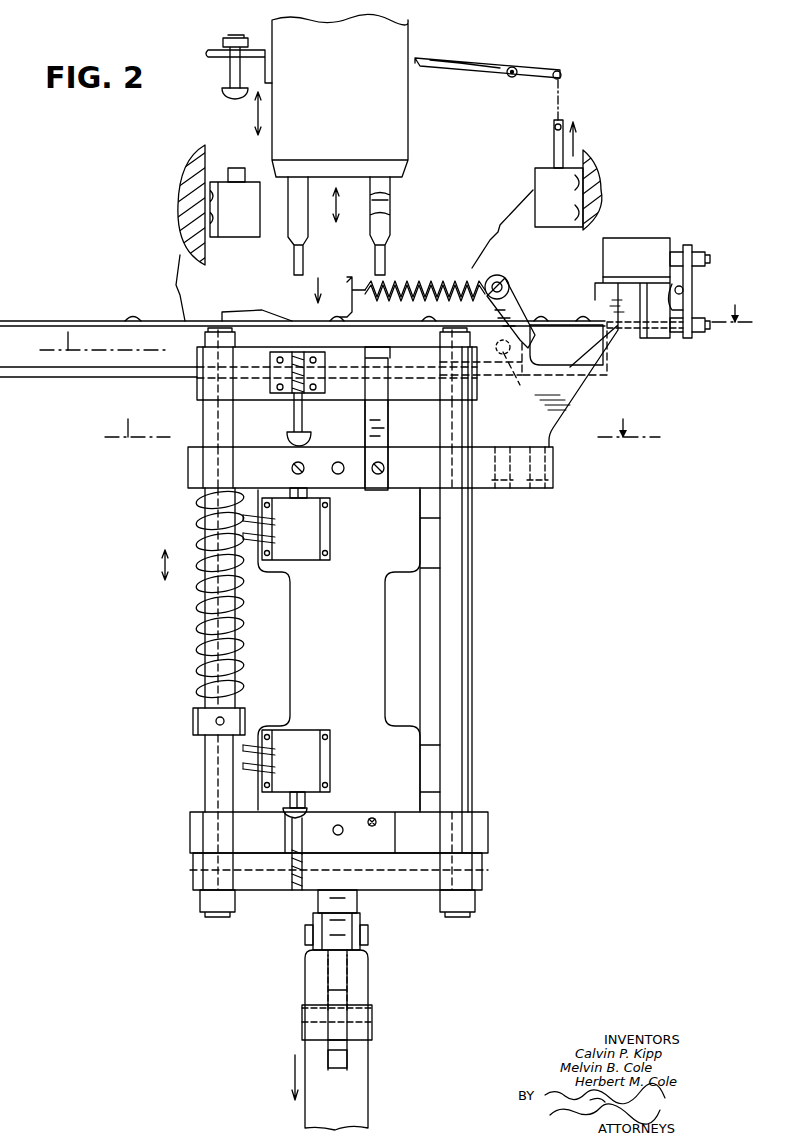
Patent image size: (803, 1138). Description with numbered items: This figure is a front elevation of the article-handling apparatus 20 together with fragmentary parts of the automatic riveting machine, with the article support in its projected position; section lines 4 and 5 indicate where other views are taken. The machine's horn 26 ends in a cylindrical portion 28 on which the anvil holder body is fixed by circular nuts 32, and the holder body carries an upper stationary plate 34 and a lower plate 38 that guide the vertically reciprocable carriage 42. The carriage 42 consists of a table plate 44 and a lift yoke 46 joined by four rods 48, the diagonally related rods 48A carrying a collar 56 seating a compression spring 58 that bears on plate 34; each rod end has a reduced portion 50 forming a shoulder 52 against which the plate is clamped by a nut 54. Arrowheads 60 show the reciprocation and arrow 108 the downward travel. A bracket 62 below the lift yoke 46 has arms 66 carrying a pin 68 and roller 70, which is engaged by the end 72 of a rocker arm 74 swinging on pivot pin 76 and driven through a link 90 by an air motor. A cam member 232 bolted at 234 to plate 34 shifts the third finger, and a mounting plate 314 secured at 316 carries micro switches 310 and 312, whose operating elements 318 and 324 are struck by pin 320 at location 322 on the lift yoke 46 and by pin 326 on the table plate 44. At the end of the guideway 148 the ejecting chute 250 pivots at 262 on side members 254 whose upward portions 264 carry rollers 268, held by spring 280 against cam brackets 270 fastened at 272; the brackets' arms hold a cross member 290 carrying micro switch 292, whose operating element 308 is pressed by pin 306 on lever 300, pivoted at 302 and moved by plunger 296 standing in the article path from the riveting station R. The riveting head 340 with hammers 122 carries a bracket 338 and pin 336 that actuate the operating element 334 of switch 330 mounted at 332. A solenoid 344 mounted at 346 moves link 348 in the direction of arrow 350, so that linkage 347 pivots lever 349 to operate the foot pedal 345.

The apparatus 20 is at (88, 262).
The guideway 148 is at (72, 320).
The section line 4 is at (396, 325).
The section line 5 is at (382, 425).
The riveting head 340 is at (348, 95).
The riveting hammers 122 is at (392, 202).
The riveting station R is at (317, 279).
The bracket 338 is at (222, 42).
The operating pin 336 is at (223, 97).
The portion of the automatic riveting machine 332 is at (202, 145).
The switch 330 is at (232, 240).
The operating element 334 is at (238, 168).
The foot pedal 345 is at (422, 56).
The lever 349 is at (535, 70).
The linkage 347 is at (552, 98).
The link 348 is at (552, 136).
The arrow 350 is at (582, 145).
The portion of the riveting machine 346 is at (598, 168).
The solenoid 344 is at (535, 180).
The spring 280 is at (440, 283).
The roller 268 is at (503, 278).
The upwardly extending portion 264 is at (512, 300).
The side members 254 is at (578, 346).
The article ejecting chute 250 is at (566, 322).
The pivot 262 is at (520, 365).
The micro switch 292 is at (650, 238).
The cross member 290 is at (598, 282).
The cam brackets 270 is at (594, 396).
The lever 300 is at (698, 278).
The operating element 308 is at (678, 250).
The pin 306 is at (705, 258).
The pivot 302 is at (684, 290).
The plunger 296 is at (680, 336).
The carriage 42 is at (192, 398).
The table plate 44 is at (346, 350).
The nut 54 is at (200, 342).
The pin 320 is at (292, 360).
The portion of reduced diameter 50 is at (200, 386).
The shoulder 52 is at (228, 403).
The diagonally related rods 48A is at (203, 428).
The rods 48 is at (440, 421).
The arrow 108 is at (261, 432).
The operating pin 326 is at (305, 408).
The cam member 232 is at (365, 422).
The securing point 316 is at (303, 462).
The plate 34 is at (186, 480).
The bolt 234 is at (385, 468).
The securing elements 272 is at (535, 485).
The operating element 324 is at (310, 494).
The mounting plate 314 is at (345, 635).
The upper micro switch 312 is at (330, 532).
The lower micro switch 310 is at (310, 728).
The operating element 318 is at (308, 796).
The compression spring 58 is at (198, 632).
The arrowheads 60 is at (160, 572).
The collar 56 is at (193, 722).
The horn 26 is at (430, 664).
The cylindrical portion 28 is at (425, 632).
The circular nuts 32 is at (430, 565).
The plate 38 is at (188, 823).
The lift yoke 46 is at (405, 895).
The pin location 322 is at (290, 880).
The bracket 62 is at (316, 902).
The arms 66 is at (315, 920).
The pin 68 is at (368, 935).
The link 90 is at (304, 992).
The roller 70 is at (326, 956).
The end of rocker arm 72 is at (348, 972).
The pivot pin 76 is at (372, 1008).
The rocker arm 74 is at (340, 1038).